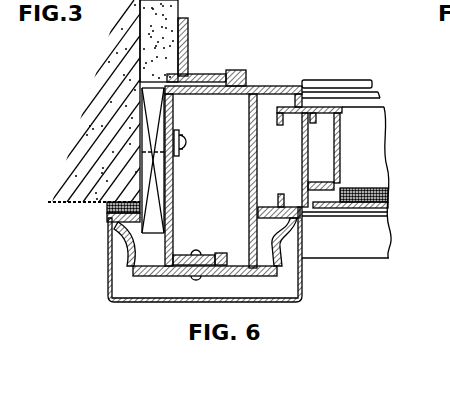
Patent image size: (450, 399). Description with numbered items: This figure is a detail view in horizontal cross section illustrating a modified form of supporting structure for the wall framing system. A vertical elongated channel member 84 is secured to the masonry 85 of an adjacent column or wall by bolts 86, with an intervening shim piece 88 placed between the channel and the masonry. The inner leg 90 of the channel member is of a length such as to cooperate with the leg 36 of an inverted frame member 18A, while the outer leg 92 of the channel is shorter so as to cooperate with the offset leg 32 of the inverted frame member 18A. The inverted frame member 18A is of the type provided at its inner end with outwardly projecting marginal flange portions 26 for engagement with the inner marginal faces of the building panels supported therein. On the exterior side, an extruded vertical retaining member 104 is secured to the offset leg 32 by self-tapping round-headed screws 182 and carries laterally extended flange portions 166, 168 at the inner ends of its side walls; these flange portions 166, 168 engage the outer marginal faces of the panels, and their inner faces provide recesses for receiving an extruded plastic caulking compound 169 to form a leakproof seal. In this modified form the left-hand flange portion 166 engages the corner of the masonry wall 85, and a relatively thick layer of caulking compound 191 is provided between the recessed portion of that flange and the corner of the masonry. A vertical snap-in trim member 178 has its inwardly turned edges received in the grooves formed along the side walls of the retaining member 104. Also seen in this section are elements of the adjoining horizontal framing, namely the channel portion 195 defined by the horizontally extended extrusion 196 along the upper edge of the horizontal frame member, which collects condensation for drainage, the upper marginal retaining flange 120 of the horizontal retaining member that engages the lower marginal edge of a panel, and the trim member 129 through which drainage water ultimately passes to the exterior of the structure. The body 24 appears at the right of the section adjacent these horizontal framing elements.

The shim piece 88 is at (140, 123).
The leg 36 is at (243, 74).
The inner leg 90 is at (233, 101).
The vertical elongated channel member 84 is at (173, 196).
The inverted frame member 18A is at (249, 157).
The bolts 86 is at (183, 141).
The offset leg 32 is at (181, 256).
The outer leg 92 is at (217, 255).
The vertical retaining member 104 is at (230, 275).
The self-tapping round-headed screws 182 is at (193, 279).
The horizontally extended extrusion 196 is at (358, 82).
The channel portion 195 is at (374, 94).
The body 24 is at (376, 107).
The marginal flange portions 26 is at (301, 105).
The upper marginal retaining flange 120 is at (387, 214).
The flange portion 168 is at (302, 216).
The trim member 129 is at (367, 259).
The caulking compound 169 is at (279, 207).
The vertical snap-in trim member 178 is at (302, 283).
The masonry 85 is at (70, 205).
The caulking compound 191 is at (112, 205).
The flange portion 166 is at (107, 220).